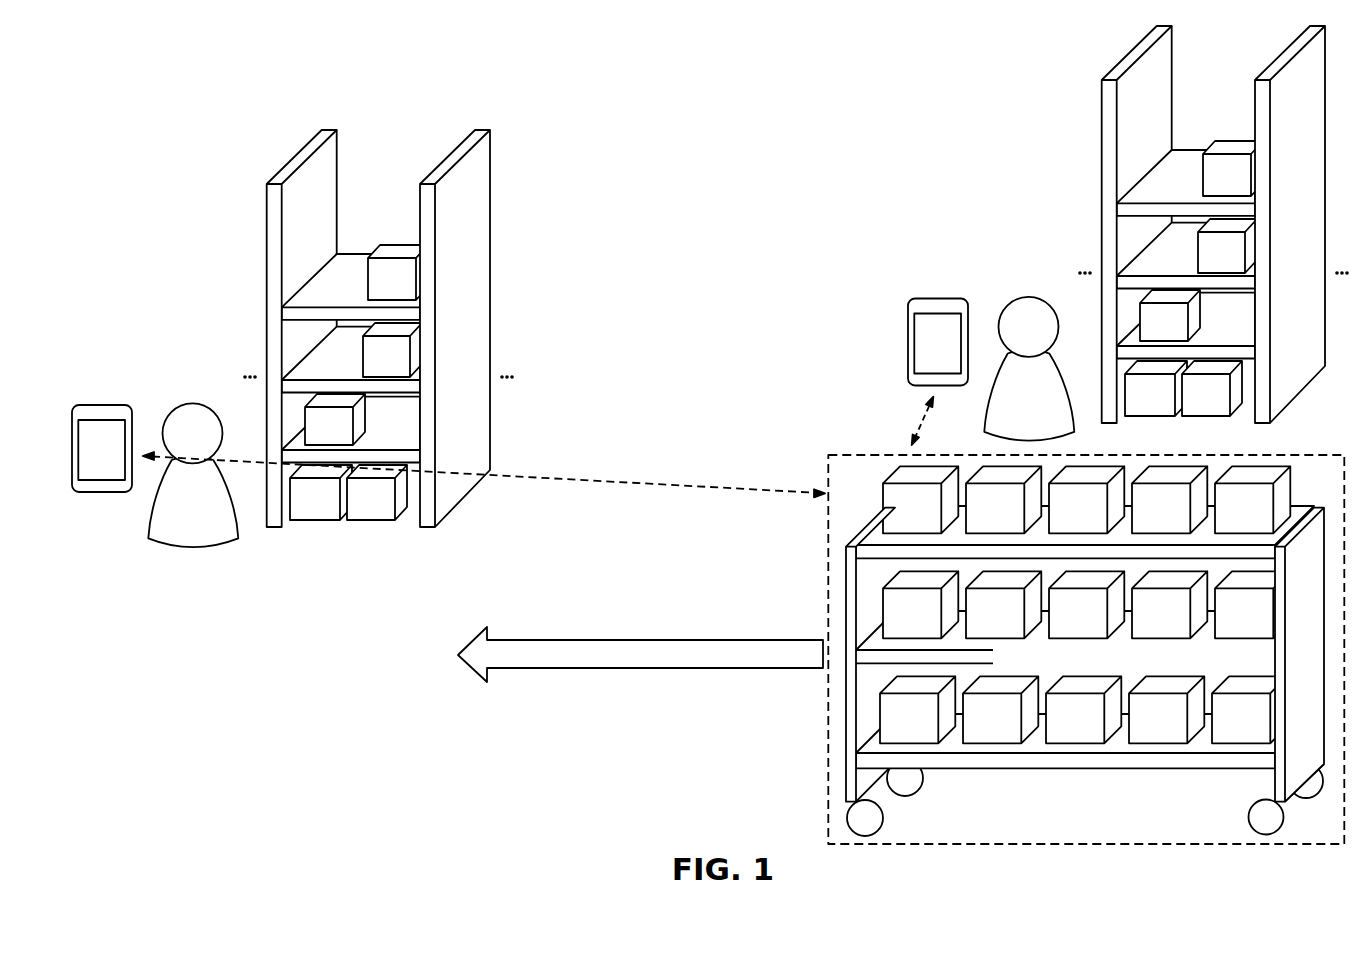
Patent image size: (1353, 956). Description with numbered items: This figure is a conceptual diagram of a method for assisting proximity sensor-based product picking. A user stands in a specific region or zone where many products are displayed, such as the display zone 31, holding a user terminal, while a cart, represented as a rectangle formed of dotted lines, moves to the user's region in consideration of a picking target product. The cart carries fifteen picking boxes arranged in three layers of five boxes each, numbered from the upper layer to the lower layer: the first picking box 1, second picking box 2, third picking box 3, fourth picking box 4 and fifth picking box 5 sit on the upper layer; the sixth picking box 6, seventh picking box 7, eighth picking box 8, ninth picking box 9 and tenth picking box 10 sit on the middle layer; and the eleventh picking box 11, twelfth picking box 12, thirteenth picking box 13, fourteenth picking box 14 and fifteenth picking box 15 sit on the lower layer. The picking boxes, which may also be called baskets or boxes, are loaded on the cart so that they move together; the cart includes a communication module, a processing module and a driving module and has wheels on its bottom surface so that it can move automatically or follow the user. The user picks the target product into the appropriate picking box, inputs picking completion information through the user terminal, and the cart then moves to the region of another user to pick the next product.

The shelf 31 is at (378, 328).
The fifteenth picking box 15 is at (1213, 224).
The first picking box 1 is at (920, 499).
The second picking box 2 is at (1003, 499).
The third picking box 3 is at (1086, 499).
The fourth picking box 4 is at (1169, 499).
The fifth picking box 5 is at (1252, 499).
The sixth picking box 6 is at (920, 604).
The seventh picking box 7 is at (1003, 604).
The eighth picking box 8 is at (1086, 604).
The ninth picking box 9 is at (1169, 604).
The tenth picking box 10 is at (1252, 604).
The eleventh picking box 11 is at (917, 709).
The twelfth picking box 12 is at (1000, 709).
The thirteenth picking box 13 is at (1083, 709).
The fourteenth picking box 14 is at (1166, 709).